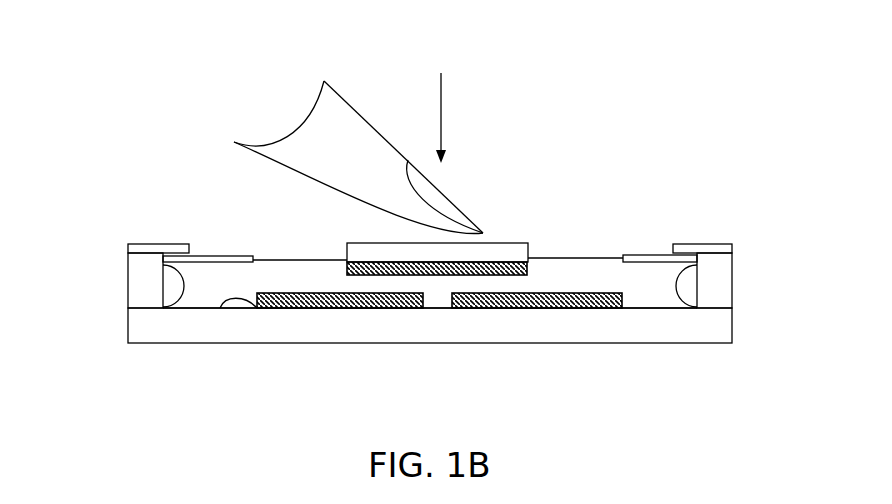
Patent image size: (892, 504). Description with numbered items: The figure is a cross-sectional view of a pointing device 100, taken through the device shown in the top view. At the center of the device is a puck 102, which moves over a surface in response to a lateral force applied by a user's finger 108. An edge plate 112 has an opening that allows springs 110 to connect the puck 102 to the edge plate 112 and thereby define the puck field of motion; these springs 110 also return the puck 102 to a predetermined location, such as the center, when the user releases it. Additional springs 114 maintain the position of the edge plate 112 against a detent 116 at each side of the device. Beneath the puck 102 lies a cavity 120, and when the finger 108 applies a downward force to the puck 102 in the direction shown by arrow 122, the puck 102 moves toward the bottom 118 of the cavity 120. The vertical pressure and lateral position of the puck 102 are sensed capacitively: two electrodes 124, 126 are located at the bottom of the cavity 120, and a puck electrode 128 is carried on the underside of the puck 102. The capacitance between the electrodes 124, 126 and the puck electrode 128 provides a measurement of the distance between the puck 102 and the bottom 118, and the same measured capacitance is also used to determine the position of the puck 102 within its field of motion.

The pointing device 100 is at (697, 135).
The puck 102 is at (505, 243).
The finger 108 is at (348, 93).
The springs 110 is at (287, 258).
The edge plate 112 is at (212, 255).
The springs 114 is at (183, 292).
The detent 116 is at (138, 243).
The bottom 118 is at (222, 303).
The cavity 120 is at (313, 278).
The arrow 122 is at (441, 105).
The electrode 124 is at (390, 306).
The electrode 126 is at (490, 306).
The puck electrode 128 is at (527, 270).